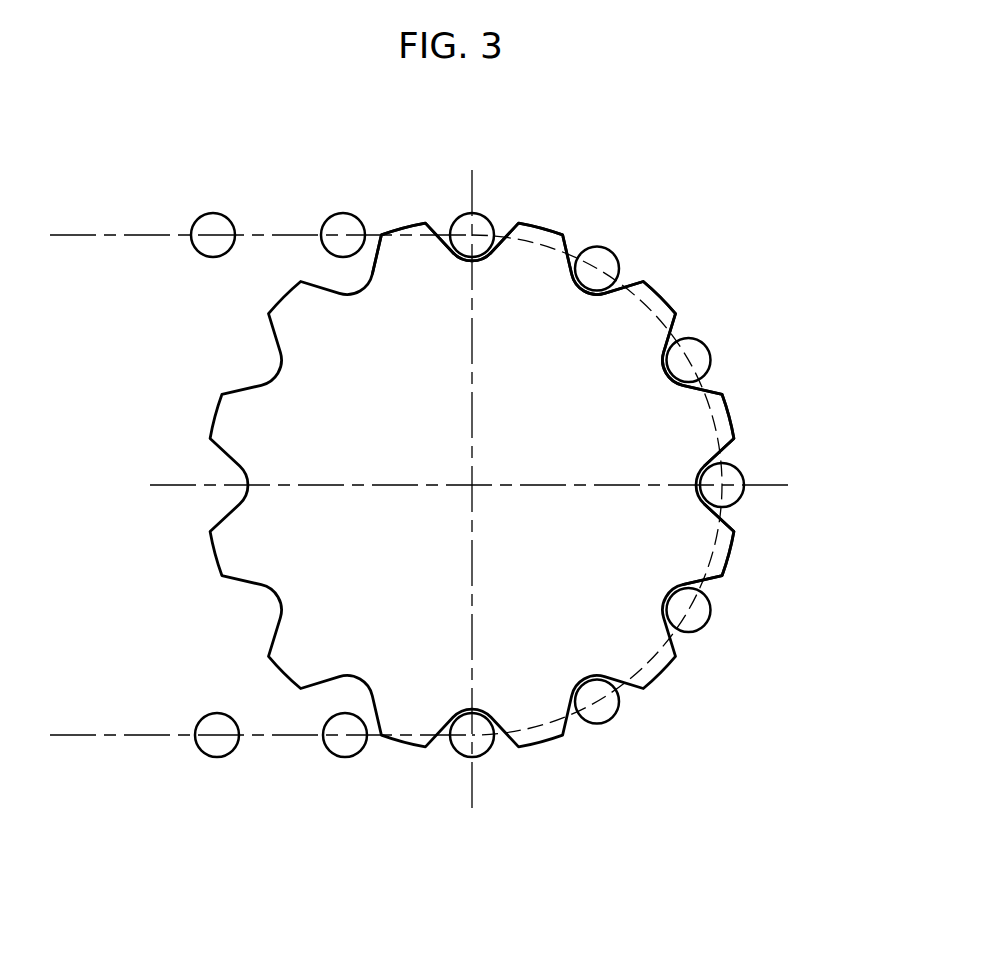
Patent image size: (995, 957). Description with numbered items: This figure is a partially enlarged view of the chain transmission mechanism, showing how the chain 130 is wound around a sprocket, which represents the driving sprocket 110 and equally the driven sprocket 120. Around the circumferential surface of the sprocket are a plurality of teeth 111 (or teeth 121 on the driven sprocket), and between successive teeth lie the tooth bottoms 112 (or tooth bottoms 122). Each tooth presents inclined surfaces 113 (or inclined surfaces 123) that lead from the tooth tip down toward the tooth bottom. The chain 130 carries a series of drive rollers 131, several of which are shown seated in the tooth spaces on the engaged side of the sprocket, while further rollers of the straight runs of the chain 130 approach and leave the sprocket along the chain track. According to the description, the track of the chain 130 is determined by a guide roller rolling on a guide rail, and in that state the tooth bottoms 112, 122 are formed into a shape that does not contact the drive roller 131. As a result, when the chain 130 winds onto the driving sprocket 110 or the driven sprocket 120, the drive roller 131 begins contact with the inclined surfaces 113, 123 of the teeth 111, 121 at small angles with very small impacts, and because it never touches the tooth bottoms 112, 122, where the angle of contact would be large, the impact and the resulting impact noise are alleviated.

The driving sprocket 110 is at (413, 485).
The driven sprocket 120 is at (315, 398).
The teeth 111 is at (612, 363).
The teeth 121 is at (407, 245).
The tooth bottoms 112 is at (517, 337).
The tooth bottoms 122 is at (668, 370).
The inclined surfaces 113 is at (670, 319).
The inclined surfaces 123 is at (505, 225).
The chain 130 is at (259, 234).
The drive roller 131 is at (497, 228).